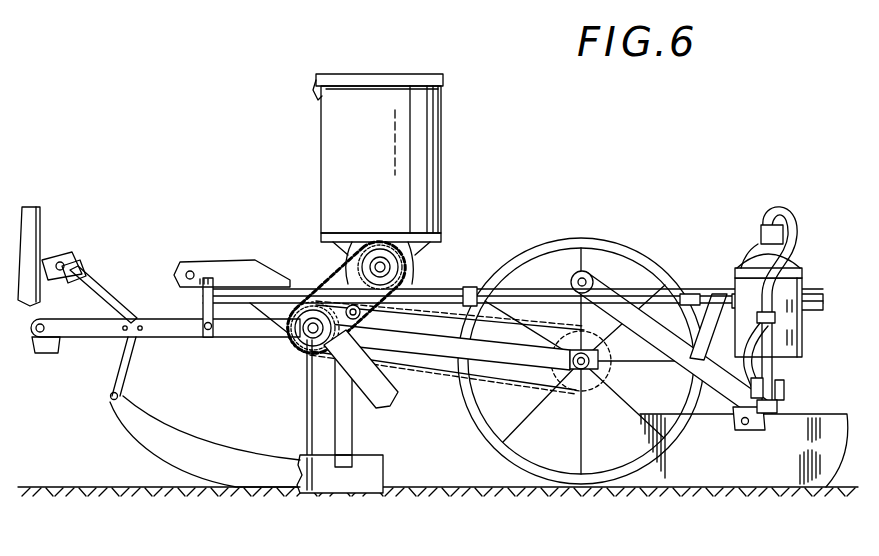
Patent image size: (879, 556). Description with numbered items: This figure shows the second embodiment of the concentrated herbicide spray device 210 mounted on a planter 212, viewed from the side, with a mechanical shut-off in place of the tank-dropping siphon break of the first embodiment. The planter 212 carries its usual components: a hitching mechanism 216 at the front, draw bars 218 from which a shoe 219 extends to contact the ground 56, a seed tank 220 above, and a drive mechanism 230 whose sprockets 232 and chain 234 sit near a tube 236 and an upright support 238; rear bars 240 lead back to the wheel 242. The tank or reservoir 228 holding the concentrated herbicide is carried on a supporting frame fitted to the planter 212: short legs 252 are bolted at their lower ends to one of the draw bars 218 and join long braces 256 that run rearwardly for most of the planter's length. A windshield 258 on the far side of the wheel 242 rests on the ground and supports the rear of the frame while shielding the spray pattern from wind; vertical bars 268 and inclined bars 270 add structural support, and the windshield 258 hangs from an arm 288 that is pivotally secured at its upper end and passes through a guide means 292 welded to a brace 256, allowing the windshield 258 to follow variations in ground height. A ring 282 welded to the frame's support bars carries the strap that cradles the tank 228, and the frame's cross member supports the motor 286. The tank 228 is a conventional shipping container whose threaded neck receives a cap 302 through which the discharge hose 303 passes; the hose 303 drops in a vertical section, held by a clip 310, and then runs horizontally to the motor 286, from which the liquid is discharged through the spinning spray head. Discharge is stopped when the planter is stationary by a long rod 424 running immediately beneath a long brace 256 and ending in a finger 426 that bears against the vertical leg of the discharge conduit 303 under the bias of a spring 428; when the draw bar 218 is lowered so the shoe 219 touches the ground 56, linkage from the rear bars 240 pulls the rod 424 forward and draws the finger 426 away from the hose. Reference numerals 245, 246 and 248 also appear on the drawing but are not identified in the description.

The ground 56 is at (50, 486).
The concentrated herbicide spray device 210 is at (809, 214).
The planter 212 is at (255, 213).
The hitching mechanism 216 is at (40, 230).
The draw bars 218 is at (158, 337).
The shoe 219 is at (190, 415).
The seed tank 220 is at (427, 140).
The tank or reservoir 228 is at (752, 228).
The drive mechanism 230 is at (333, 285).
The sprockets 232 is at (383, 258).
The chain 234 is at (397, 297).
The tube 236 is at (352, 423).
The upright support 238 is at (305, 414).
The rear bars 240 is at (427, 343).
The wheel 242 is at (487, 427).
The wheel drive chain 245 is at (406, 364).
The hub sprocket 246 is at (590, 403).
The sprocket shaft 248 is at (290, 346).
The short legs 252 is at (205, 305).
The long braces 256 is at (466, 287).
The windshield 258 is at (677, 474).
The vertical bars 268 is at (780, 362).
The inclined bars 270 is at (762, 435).
The ring 282 is at (799, 266).
The motor 286 is at (787, 397).
The arms 288 is at (597, 289).
The guide means 292 is at (718, 292).
The cap 302 is at (760, 225).
The discharge hose 303 is at (781, 212).
The clip 310 is at (792, 318).
The long rod 424 is at (490, 286).
The finger 426 is at (757, 256).
The spring 428 is at (683, 292).